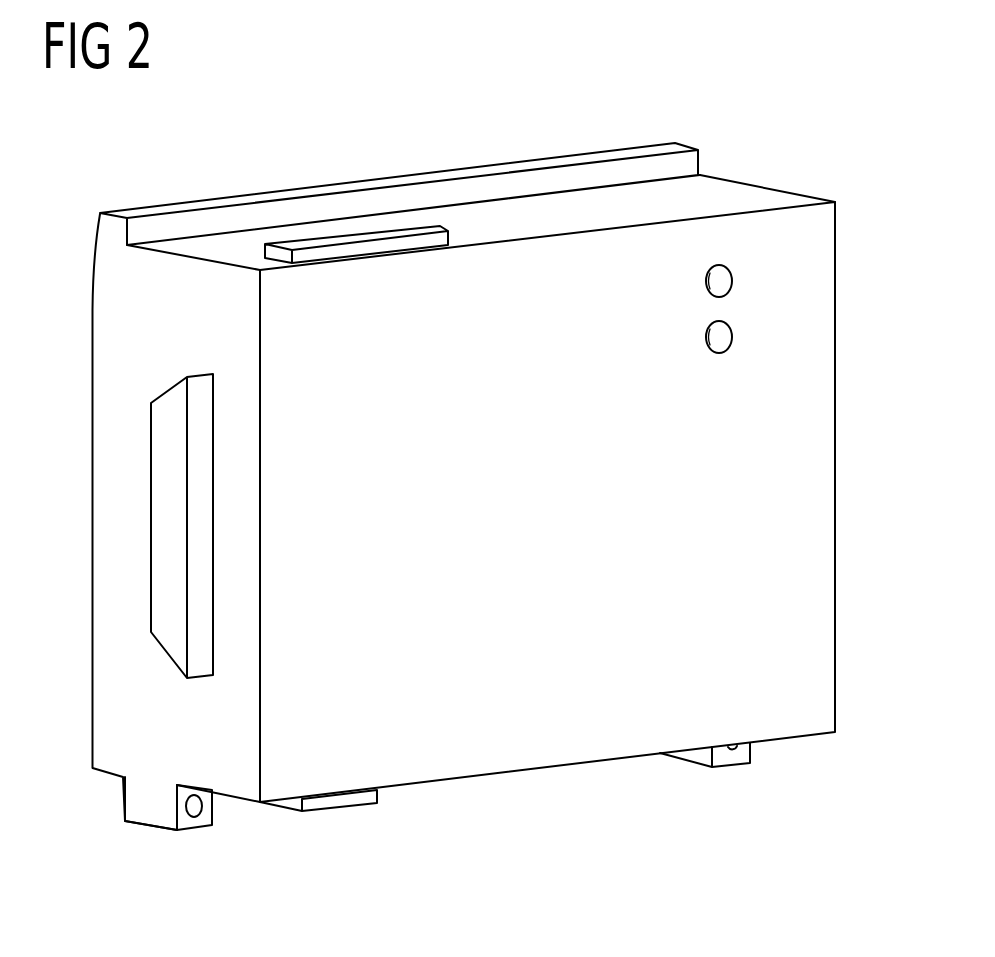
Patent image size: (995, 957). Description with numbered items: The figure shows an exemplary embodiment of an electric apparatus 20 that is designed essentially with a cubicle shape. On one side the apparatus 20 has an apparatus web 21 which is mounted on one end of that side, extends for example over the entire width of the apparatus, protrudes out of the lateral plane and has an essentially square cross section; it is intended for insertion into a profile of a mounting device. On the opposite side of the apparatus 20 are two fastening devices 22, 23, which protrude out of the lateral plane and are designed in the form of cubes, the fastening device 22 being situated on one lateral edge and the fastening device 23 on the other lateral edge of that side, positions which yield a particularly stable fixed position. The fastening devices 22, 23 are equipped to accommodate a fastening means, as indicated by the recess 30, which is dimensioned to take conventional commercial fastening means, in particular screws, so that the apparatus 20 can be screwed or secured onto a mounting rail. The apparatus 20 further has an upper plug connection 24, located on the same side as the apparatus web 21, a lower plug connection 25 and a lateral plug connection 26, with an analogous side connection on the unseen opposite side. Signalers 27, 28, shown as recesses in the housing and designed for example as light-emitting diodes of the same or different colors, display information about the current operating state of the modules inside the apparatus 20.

The apparatus 20 is at (84, 357).
The apparatus web 21 is at (505, 163).
The fastening device 22 is at (150, 802).
The fastening device 23 is at (727, 763).
The upper plug connection 24 is at (335, 238).
The lower plug connection 25 is at (345, 802).
The lateral plug connection 26 is at (170, 540).
The signaler 27 is at (722, 277).
The signaler 28 is at (722, 337).
The recess 30 is at (194, 812).